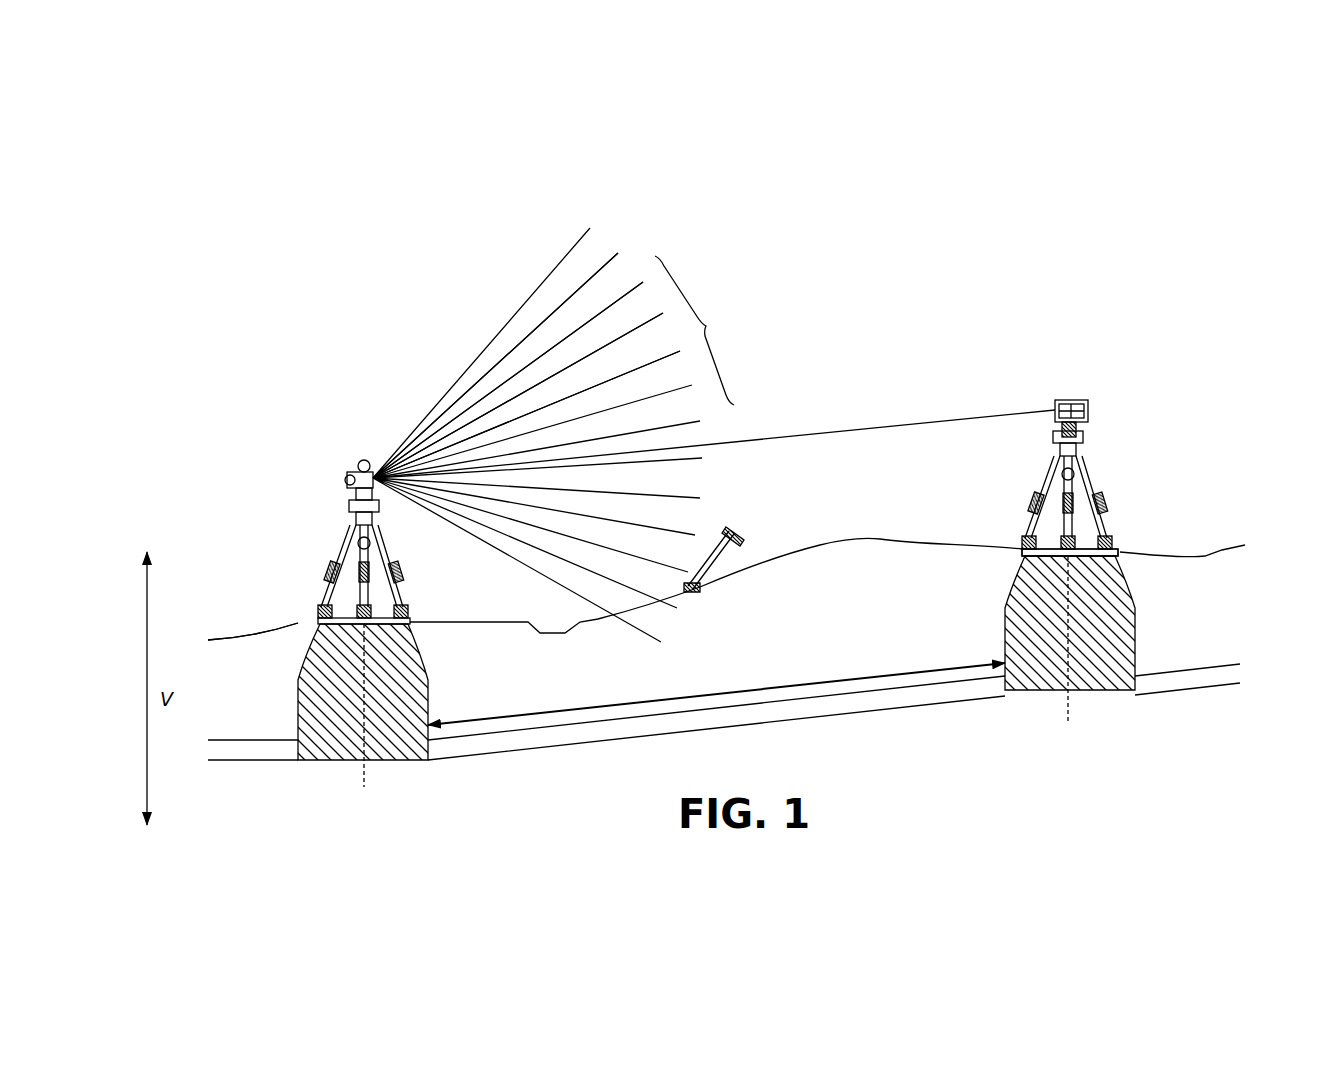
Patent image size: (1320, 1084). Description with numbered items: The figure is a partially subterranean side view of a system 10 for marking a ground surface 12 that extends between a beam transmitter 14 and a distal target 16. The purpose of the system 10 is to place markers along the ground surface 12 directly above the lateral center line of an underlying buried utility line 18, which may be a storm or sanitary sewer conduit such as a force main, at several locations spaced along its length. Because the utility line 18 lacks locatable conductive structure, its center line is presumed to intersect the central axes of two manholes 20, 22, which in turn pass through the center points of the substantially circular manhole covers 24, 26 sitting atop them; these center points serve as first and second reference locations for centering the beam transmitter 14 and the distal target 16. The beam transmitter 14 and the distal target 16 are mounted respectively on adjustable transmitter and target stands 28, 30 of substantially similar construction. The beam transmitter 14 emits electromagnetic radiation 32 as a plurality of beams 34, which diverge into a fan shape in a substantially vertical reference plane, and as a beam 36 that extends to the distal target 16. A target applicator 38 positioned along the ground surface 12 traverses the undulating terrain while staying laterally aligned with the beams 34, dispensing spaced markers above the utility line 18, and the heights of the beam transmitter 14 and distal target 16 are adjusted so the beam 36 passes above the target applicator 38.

The system 10 is at (1005, 208).
The ground surface 12 is at (873, 540).
The beam transmitter 14 is at (349, 468).
The distal target 16 is at (1092, 400).
The utility line 18 is at (540, 746).
The manhole 20 is at (293, 636).
The manhole 22 is at (1142, 614).
The manhole cover 24 is at (410, 618).
The manhole cover 26 is at (1022, 548).
The transmitter stand 28 is at (330, 532).
The target stand 30 is at (1103, 468).
The electromagnetic radiation 32 is at (717, 238).
The plurality of beams 34 is at (554, 365).
The beam 36 is at (883, 427).
The target applicator 38 is at (748, 525).